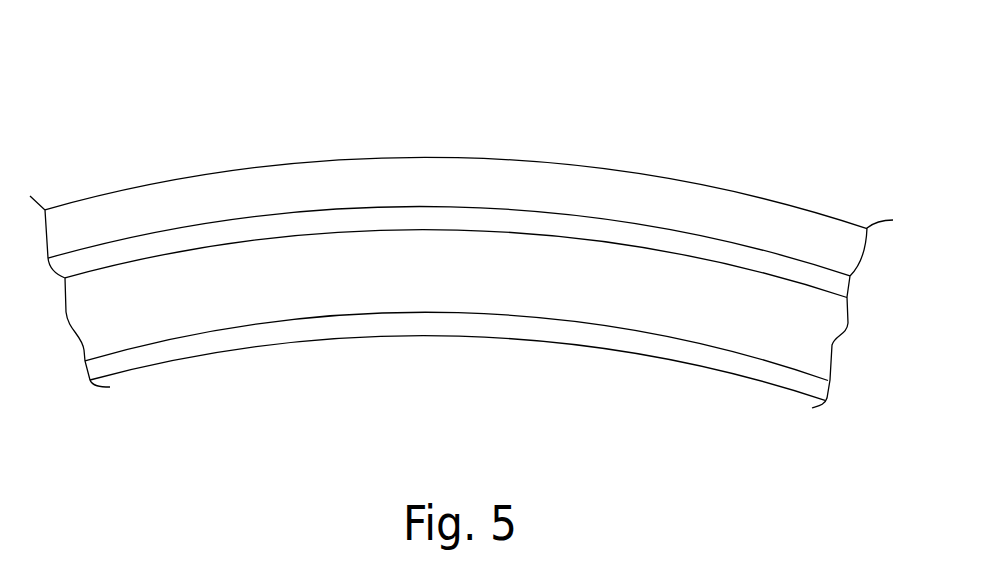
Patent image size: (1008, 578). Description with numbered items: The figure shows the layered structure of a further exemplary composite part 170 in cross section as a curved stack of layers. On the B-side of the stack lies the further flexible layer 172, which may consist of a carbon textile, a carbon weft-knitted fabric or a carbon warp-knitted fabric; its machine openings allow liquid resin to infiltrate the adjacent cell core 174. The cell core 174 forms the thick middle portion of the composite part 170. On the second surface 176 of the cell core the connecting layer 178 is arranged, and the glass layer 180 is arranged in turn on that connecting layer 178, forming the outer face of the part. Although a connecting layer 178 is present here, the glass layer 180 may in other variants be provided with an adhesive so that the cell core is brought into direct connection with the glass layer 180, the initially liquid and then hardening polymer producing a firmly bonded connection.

The composite part 170 is at (102, 107).
The B-side further flexible layer 172 is at (608, 340).
The cell core 174 is at (510, 293).
The second surface of the cell core 176 is at (417, 228).
The connecting layer 178 is at (505, 222).
The glass layer 180 is at (602, 200).